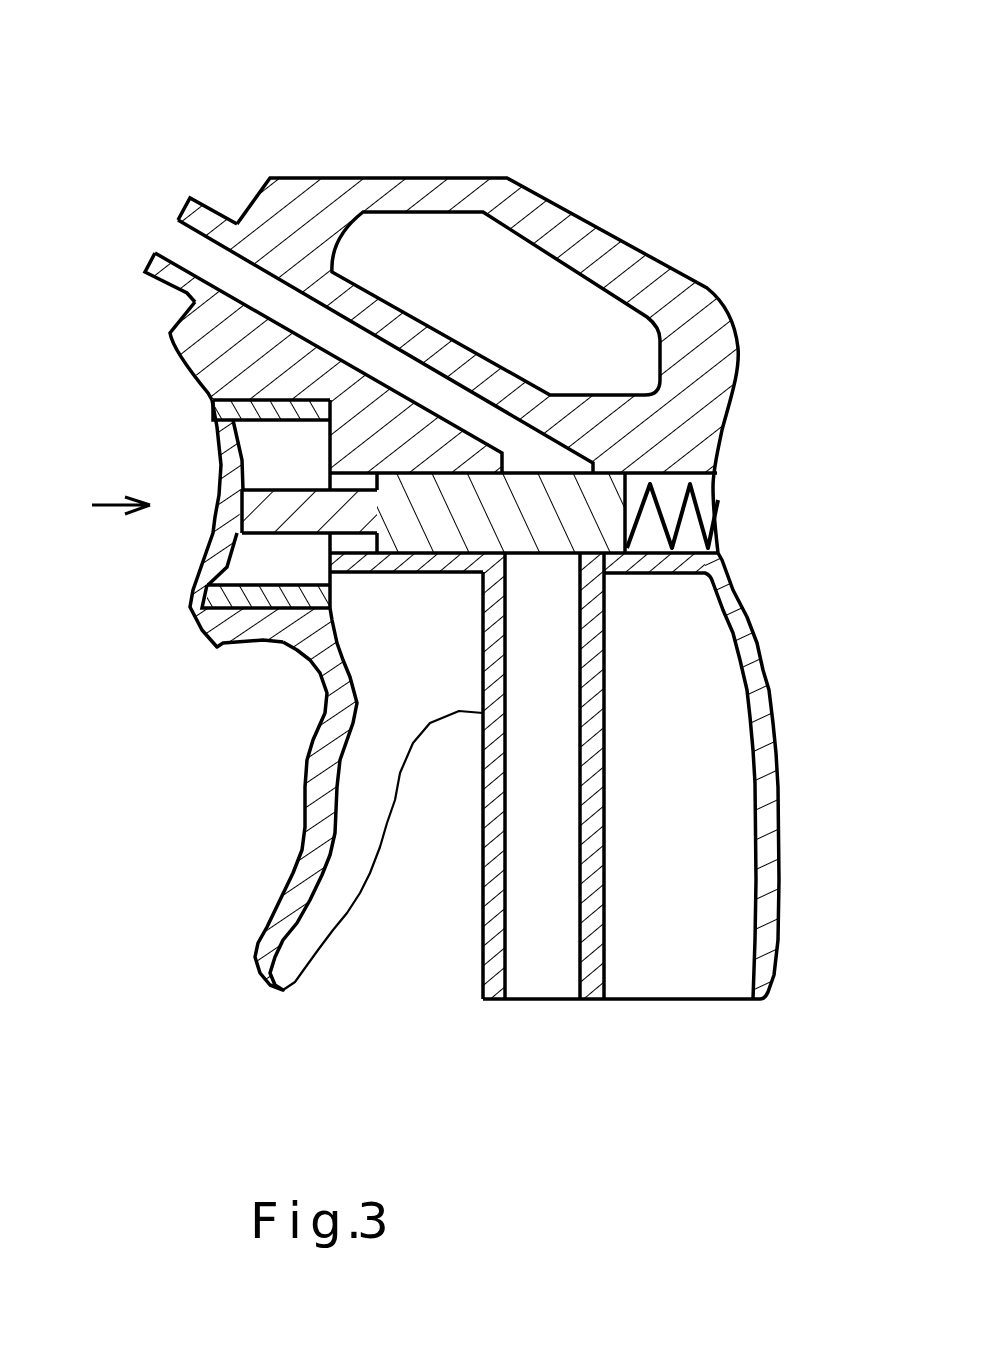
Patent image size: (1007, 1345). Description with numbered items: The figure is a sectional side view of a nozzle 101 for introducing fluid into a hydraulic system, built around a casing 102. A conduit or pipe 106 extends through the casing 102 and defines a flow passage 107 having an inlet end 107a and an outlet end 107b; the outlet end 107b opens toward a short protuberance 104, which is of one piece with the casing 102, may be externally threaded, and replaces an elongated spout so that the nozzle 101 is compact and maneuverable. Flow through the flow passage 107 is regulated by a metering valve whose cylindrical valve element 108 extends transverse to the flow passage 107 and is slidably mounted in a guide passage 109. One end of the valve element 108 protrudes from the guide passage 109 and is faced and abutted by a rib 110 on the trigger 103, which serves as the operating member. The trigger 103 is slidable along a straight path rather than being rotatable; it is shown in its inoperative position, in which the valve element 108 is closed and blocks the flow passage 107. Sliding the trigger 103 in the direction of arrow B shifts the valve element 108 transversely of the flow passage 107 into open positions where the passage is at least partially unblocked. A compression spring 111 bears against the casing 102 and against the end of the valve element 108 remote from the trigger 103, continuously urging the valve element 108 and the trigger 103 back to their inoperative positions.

The nozzle 101 is at (698, 77).
The casing 102 is at (727, 278).
The trigger 103 is at (193, 542).
The protuberance 104 is at (218, 213).
The conduit or pipe 106 is at (607, 893).
The flow passage 107 is at (560, 720).
The inlet end 107a is at (542, 1000).
The outlet end 107b is at (157, 240).
The valve element 108 is at (528, 552).
The guide passage 109 is at (703, 490).
The rib 110 is at (240, 452).
The compression spring 111 is at (715, 538).